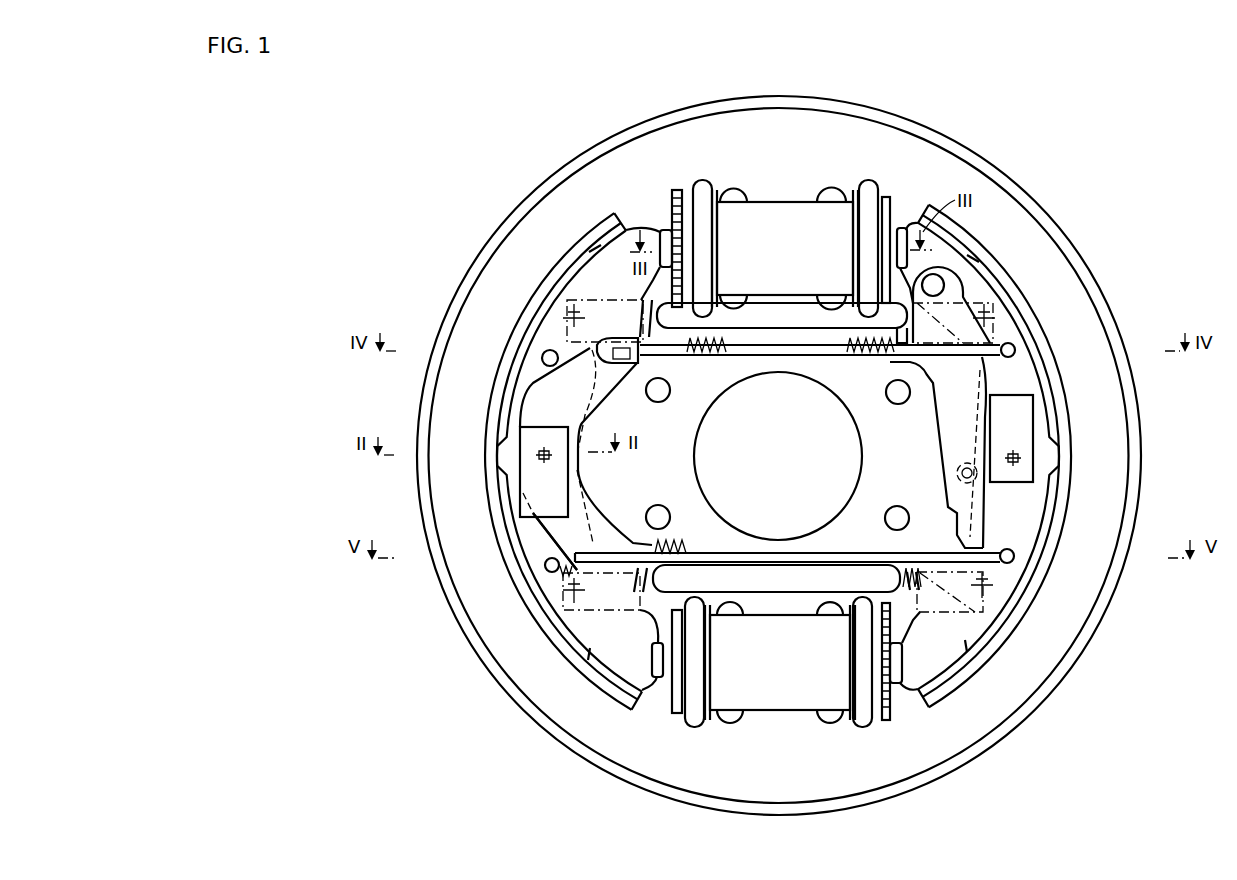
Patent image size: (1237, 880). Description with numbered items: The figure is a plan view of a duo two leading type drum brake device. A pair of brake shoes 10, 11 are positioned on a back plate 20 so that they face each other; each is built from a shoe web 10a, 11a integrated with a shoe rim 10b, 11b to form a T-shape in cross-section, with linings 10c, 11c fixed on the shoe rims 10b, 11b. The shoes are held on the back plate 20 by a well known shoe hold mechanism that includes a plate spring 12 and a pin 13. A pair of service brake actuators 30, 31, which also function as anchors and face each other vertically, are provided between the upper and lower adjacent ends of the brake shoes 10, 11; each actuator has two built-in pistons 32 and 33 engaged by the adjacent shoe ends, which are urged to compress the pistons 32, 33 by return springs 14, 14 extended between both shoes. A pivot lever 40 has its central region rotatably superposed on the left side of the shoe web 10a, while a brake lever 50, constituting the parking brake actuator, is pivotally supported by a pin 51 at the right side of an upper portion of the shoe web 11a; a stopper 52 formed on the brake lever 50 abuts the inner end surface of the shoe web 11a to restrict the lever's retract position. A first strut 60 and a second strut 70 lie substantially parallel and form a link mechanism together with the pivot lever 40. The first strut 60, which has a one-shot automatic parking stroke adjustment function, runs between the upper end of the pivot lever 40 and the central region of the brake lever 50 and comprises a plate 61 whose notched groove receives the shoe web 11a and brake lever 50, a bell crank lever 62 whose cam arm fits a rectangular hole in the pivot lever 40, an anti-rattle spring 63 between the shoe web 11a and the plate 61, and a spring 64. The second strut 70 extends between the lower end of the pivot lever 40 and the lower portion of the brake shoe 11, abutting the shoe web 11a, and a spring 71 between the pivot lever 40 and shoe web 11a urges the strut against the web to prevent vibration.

The brake shoe 10 is at (551, 264).
The shoe web 10a is at (520, 383).
The shoe rim 10b is at (527, 333).
The lining 10c is at (500, 457).
The brake shoe 11 is at (1056, 331).
The shoe web 11a is at (1040, 380).
The shoe rim 11b is at (1043, 548).
The lining 11c is at (1068, 425).
The plate spring 12 is at (563, 496).
The pin 13 is at (557, 455).
The return spring 14 is at (817, 355).
The back plate 20 is at (1057, 235).
The service brake actuator 30 is at (795, 203).
The service brake actuator 31 is at (780, 713).
The piston 32 is at (657, 222).
The piston 33 is at (897, 223).
The pivot lever 40 is at (553, 532).
The brake lever 50 is at (940, 420).
The pin 51 is at (940, 278).
The stopper 52 is at (957, 471).
The first strut 60 is at (757, 356).
The plate 61 is at (805, 328).
The bell crank lever 62 is at (754, 456).
The anti-rattle spring 63 is at (881, 455).
The spring 64 is at (672, 365).
The second strut 70 is at (790, 553).
The spring 71 is at (727, 563).